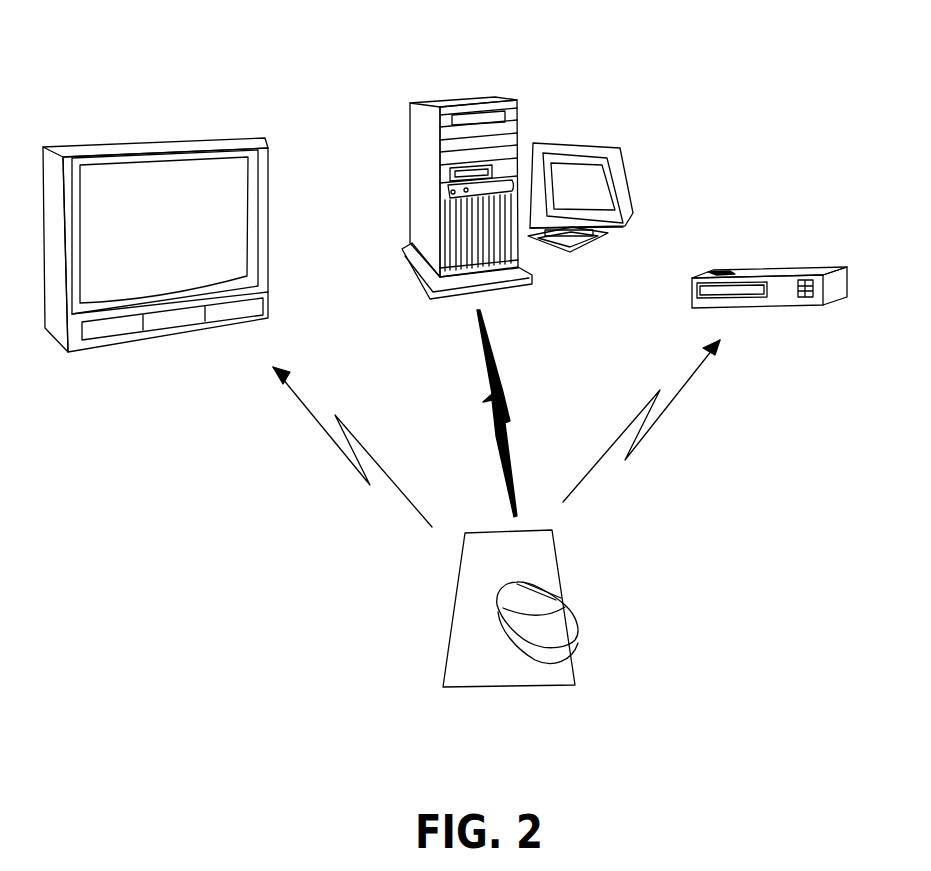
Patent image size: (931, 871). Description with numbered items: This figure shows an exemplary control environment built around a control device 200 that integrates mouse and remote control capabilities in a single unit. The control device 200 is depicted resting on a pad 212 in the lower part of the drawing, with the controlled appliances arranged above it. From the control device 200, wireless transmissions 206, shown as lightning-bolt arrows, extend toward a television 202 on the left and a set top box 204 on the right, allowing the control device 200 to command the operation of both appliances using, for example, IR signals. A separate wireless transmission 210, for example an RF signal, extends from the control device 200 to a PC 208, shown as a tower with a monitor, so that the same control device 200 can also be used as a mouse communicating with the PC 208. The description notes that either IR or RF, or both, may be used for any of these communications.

The control device 200 is at (577, 653).
The television 202 is at (170, 138).
The set top box 204 is at (773, 268).
The wireless transmissions 206 is at (342, 452).
The PC 208 is at (455, 100).
The wireless transmissions 210 is at (507, 402).
The pad / operating surface 212 is at (453, 610).